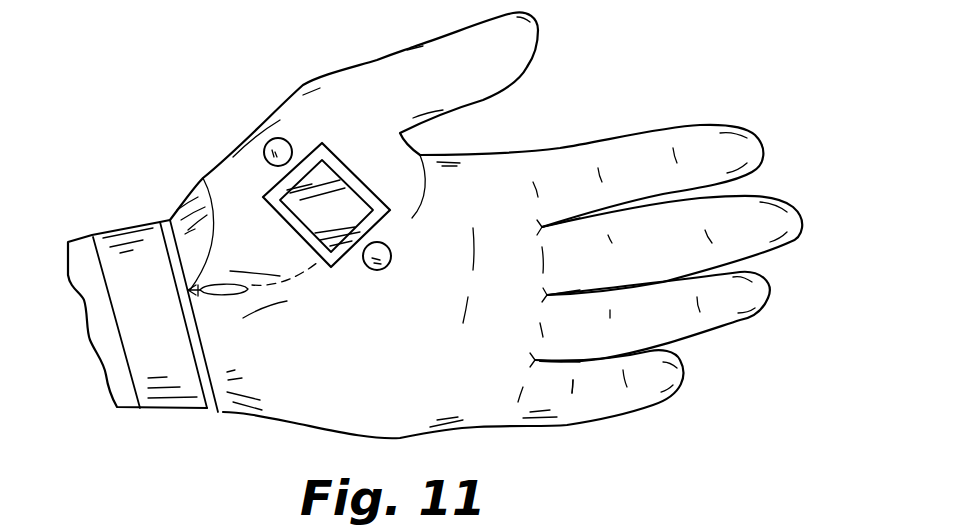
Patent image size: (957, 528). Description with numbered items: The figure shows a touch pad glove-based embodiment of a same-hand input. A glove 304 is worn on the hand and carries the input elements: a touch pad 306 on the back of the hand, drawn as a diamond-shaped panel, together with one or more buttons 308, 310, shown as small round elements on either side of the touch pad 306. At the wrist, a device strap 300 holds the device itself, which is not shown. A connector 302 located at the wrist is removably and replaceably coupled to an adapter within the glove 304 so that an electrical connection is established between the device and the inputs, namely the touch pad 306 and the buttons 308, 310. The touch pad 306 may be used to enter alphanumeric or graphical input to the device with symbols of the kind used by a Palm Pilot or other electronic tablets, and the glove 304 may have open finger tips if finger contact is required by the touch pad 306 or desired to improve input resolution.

The device strap 300 is at (120, 228).
The connector 302 is at (203, 182).
The glove 304 is at (300, 410).
The touch pad 306 is at (337, 170).
The button 308 is at (282, 137).
The button 310 is at (377, 271).